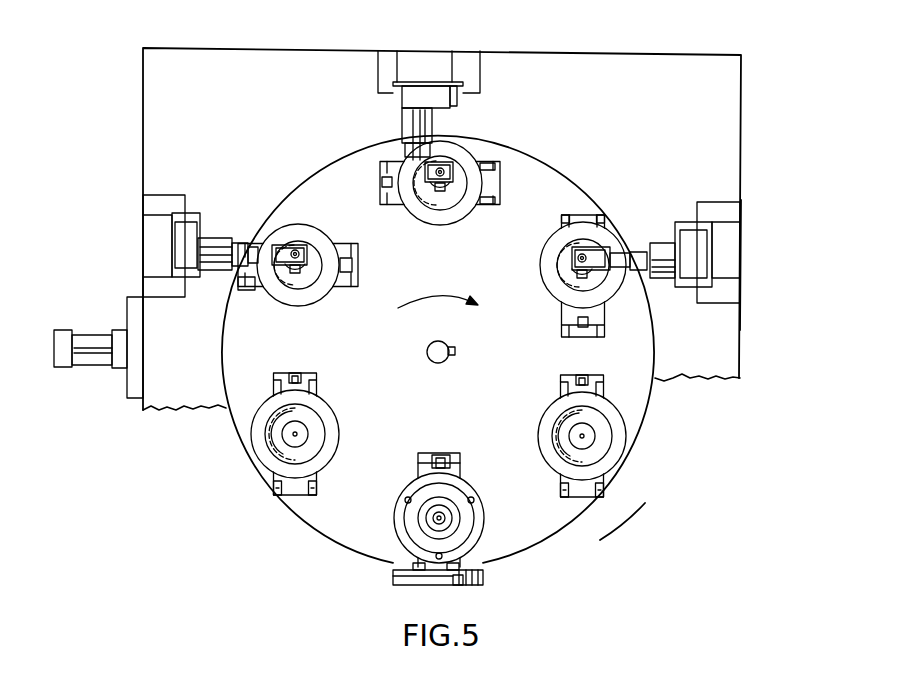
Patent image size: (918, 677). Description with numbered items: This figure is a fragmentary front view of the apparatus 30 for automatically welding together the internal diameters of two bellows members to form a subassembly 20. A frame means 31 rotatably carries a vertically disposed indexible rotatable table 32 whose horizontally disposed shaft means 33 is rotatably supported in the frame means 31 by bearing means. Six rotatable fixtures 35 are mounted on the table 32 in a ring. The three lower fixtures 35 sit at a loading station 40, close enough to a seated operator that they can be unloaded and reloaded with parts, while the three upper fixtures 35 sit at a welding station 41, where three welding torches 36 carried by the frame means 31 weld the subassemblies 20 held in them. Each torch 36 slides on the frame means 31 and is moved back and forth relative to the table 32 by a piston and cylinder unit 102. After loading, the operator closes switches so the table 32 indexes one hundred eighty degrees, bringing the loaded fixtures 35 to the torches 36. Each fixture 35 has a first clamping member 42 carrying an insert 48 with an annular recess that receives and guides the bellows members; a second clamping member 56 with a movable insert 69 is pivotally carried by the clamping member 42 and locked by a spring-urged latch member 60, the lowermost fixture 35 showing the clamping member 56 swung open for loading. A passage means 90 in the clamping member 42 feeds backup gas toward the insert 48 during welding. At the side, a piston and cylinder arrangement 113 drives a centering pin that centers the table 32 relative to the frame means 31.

The subassembly 20 is at (412, 517).
The apparatus 30 is at (484, 229).
The frame means 31 is at (725, 158).
The rotatable table 32 is at (562, 186).
The shaft means 33 is at (437, 343).
The rotatable fixture 35 is at (480, 155).
The welding torch 36 is at (448, 187).
The loading station 40 is at (650, 503).
The welding station 41 is at (766, 263).
The first clamping member 42 is at (407, 488).
The insert 48 is at (455, 493).
The second clamping member 56 is at (462, 582).
The latch member 60 is at (447, 460).
The movable insert 69 is at (405, 562).
The passage means 90 is at (468, 502).
The piston and cylinder unit 102 is at (394, 103).
The piston and cylinder arrangement 113 is at (94, 330).